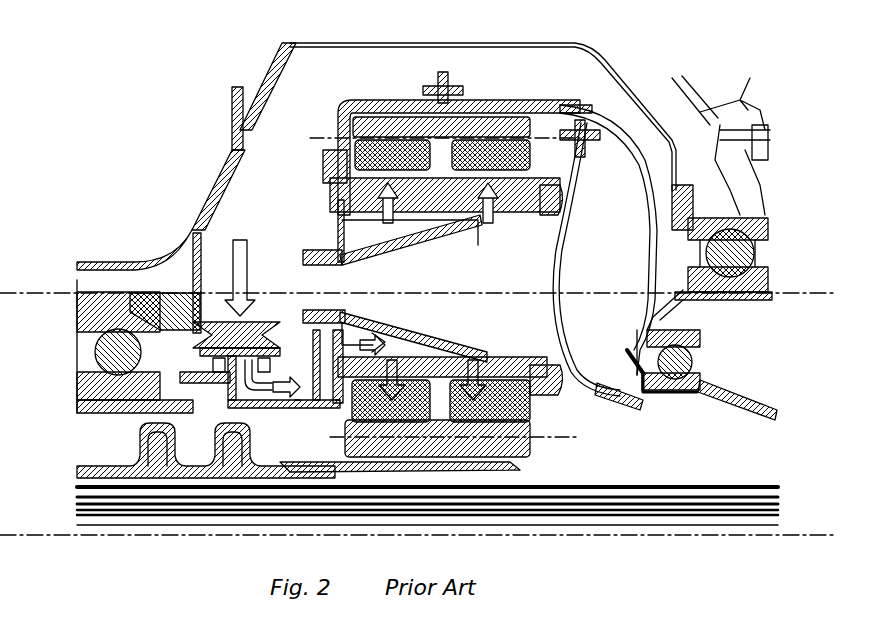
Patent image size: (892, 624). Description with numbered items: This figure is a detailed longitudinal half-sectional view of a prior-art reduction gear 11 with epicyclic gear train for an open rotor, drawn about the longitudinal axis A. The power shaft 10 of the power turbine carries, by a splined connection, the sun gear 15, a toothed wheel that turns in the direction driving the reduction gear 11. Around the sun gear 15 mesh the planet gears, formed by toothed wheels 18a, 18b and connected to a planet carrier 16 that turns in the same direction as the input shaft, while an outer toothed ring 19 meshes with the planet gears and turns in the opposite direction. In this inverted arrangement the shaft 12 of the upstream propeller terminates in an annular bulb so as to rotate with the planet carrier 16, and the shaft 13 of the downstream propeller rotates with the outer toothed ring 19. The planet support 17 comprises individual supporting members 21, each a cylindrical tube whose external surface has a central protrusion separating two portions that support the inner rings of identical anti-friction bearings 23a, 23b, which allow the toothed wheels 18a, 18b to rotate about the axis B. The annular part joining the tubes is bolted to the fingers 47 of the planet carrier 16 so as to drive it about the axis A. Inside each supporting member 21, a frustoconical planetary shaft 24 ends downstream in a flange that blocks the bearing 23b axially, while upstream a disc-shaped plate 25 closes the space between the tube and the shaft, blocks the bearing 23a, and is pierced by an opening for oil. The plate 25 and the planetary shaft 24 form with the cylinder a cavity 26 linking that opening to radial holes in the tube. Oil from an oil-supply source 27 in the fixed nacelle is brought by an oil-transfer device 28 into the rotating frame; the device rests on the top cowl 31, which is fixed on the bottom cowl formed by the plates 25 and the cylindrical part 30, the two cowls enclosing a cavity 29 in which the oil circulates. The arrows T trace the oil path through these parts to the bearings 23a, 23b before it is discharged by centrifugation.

The power shaft 10 is at (103, 470).
The reduction gear 11 is at (598, 432).
The shaft of the upstream propeller 12 is at (760, 308).
The shaft of the downstream propeller 13 is at (737, 402).
The sun gear 15 is at (527, 458).
The planet carrier 16 is at (392, 100).
The planet support 17 is at (550, 200).
The toothed wheel 18a is at (340, 125).
The toothed wheel 18b is at (493, 130).
The outer toothed ring 19 is at (478, 120).
The individual supporting member 21 is at (343, 207).
The anti-friction bearing 23a is at (337, 127).
The anti-friction bearing 23b is at (527, 178).
The planetary shaft 24 is at (413, 327).
The plate 25 is at (340, 243).
The cavity 26 is at (363, 330).
The oil-supply source 27 is at (238, 247).
The oil-transfer device 28 is at (188, 332).
The cavity 29 is at (297, 400).
The cylindrical part 30 is at (335, 400).
The top cowl 31 is at (298, 337).
The fingers of the planet carrier 47 is at (330, 197).
The longitudinal axis A is at (826, 535).
The axis B is at (826, 293).
The arrows T is at (242, 270).